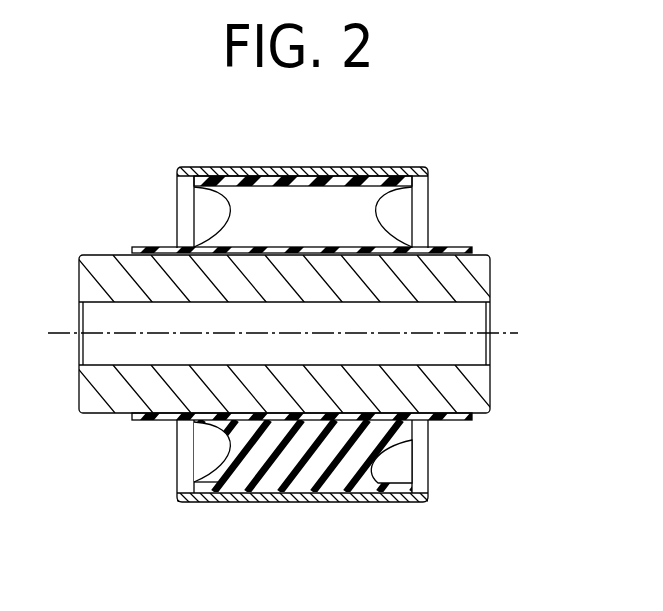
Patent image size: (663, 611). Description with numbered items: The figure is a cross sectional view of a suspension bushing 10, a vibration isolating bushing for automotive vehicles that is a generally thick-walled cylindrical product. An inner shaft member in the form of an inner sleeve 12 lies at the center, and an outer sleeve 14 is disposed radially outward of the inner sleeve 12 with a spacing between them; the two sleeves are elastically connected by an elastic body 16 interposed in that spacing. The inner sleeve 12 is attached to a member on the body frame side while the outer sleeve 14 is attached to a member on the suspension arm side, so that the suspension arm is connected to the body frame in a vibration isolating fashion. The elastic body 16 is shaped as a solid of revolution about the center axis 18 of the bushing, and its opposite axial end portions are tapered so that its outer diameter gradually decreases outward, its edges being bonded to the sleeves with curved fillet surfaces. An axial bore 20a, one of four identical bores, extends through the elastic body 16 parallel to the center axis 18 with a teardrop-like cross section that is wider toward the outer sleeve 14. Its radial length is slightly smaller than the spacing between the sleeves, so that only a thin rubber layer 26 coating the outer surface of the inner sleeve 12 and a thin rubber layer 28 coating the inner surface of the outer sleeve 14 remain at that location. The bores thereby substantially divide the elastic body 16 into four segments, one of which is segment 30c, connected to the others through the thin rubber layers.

The suspension bushing 10 is at (455, 143).
The inner sleeve 12 is at (125, 263).
The outer sleeve 14 is at (246, 498).
The elastic body 16 is at (322, 494).
The center axis 18 is at (500, 332).
The axial bore 20a is at (313, 177).
The thin rubber layer 26 is at (371, 250).
The thin rubber layer 28 is at (240, 169).
The segment 30c is at (342, 443).